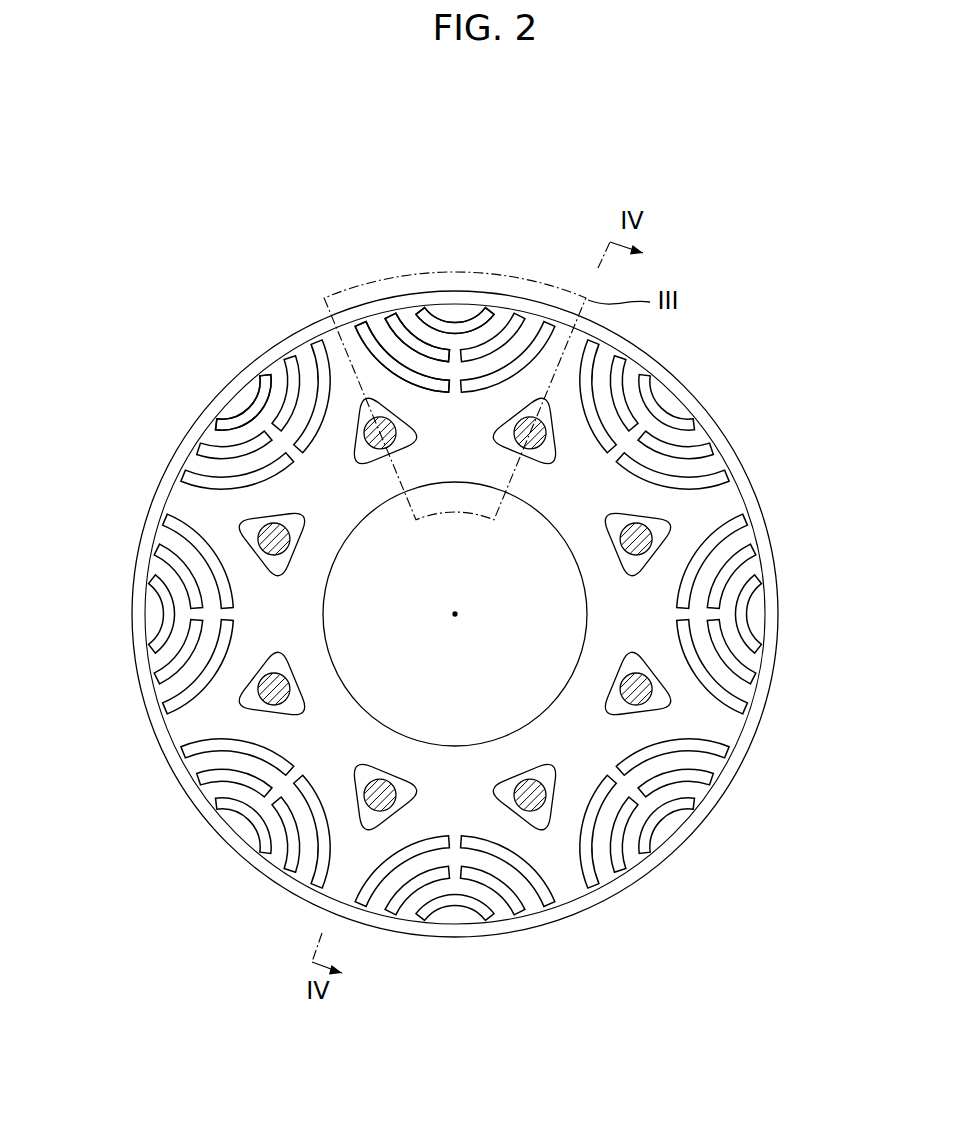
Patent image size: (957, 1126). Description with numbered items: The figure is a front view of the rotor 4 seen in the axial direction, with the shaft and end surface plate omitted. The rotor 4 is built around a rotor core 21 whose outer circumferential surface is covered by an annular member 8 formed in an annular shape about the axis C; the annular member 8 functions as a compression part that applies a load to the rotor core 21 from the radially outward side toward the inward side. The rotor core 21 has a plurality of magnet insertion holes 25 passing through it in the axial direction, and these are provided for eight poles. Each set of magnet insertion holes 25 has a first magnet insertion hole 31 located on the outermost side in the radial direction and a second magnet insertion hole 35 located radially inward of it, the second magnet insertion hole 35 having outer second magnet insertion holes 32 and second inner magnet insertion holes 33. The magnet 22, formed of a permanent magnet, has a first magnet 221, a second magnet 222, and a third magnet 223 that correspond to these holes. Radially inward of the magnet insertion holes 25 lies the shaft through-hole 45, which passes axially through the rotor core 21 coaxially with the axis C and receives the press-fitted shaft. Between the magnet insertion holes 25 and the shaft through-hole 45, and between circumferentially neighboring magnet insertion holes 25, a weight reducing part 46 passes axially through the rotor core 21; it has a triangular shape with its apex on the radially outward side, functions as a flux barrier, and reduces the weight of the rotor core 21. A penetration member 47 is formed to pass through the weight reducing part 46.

The rotor 4 is at (157, 509).
The annular member 8 is at (772, 617).
The rotor core 21 is at (243, 398).
The magnet 22 is at (640, 157).
The first magnet 221 is at (457, 322).
The second magnet 222 is at (508, 329).
The third magnet 223 is at (537, 349).
The magnet insertion holes 25 is at (303, 157).
The first magnet insertion hole 31 is at (412, 306).
The outer second magnet insertion holes 32 is at (389, 315).
The second inner magnet insertion holes 33 is at (354, 331).
The second magnet insertion hole 35 is at (268, 204).
The shaft through-hole 45 is at (535, 545).
The weight reducing part 46 is at (668, 527).
The penetration member 47 is at (645, 540).
The axis C is at (459, 614).